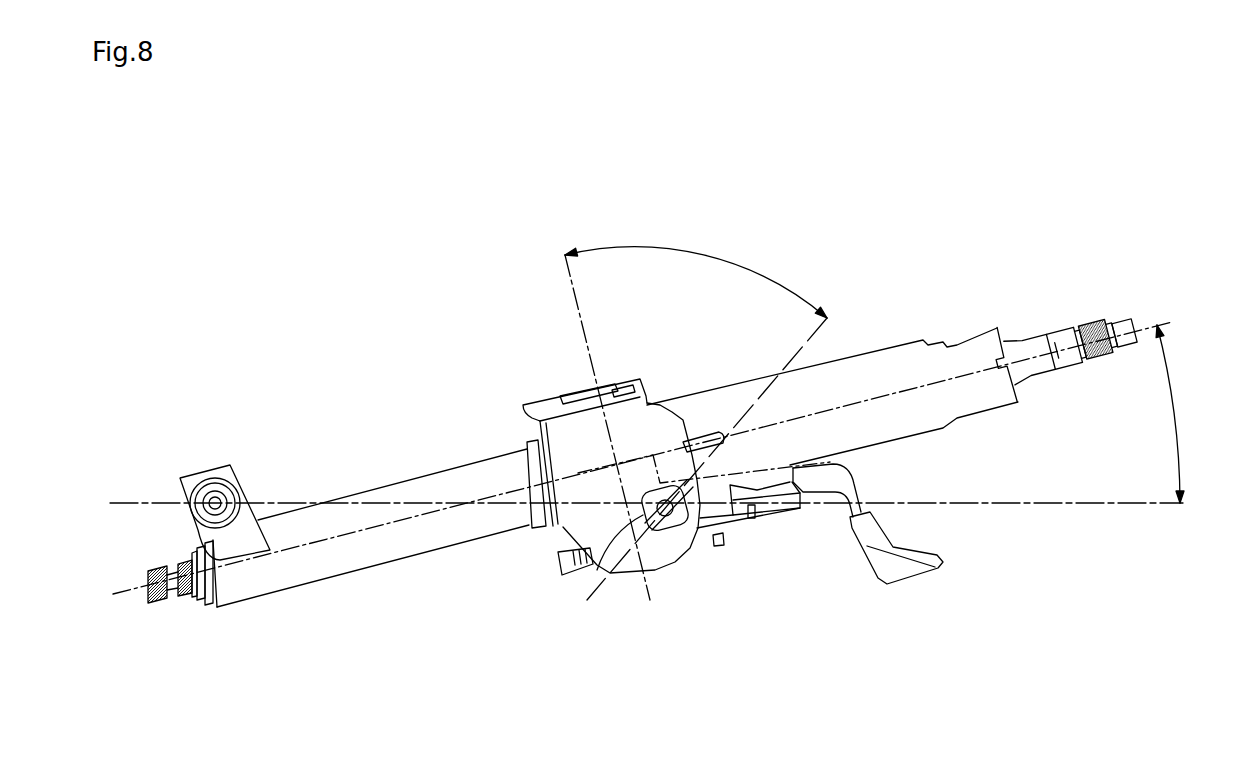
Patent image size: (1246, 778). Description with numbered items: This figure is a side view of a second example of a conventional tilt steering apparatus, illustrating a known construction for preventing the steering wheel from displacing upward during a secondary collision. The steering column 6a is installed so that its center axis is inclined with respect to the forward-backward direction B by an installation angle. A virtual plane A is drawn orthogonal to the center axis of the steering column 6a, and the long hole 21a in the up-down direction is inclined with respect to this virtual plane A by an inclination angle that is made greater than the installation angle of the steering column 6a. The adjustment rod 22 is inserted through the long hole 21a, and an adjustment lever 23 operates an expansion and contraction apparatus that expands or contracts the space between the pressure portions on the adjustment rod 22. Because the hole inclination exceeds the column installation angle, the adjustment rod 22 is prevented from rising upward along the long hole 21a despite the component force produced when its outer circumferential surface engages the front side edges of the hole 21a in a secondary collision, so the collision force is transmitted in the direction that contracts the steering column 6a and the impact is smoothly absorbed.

The steering column 6a is at (878, 362).
The long hole in the up-down direction 21a is at (668, 530).
The adjustment rod 22 is at (597, 565).
The adjustment lever 23 is at (910, 566).
The virtual plane A is at (578, 307).
The forward-backward direction B is at (1047, 507).